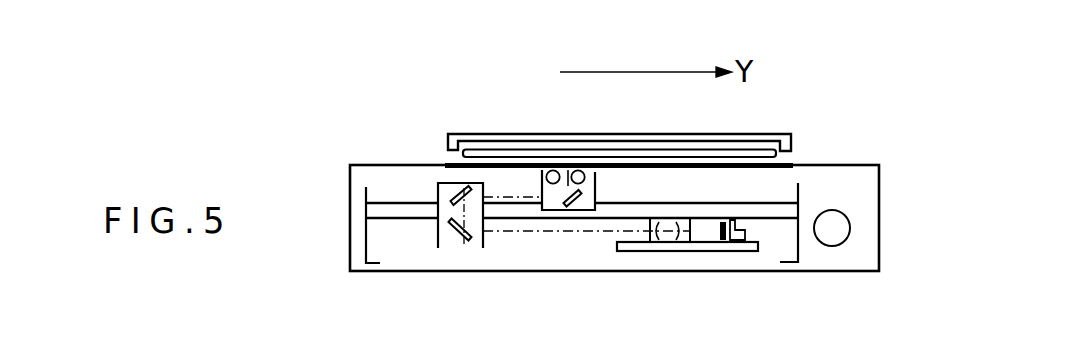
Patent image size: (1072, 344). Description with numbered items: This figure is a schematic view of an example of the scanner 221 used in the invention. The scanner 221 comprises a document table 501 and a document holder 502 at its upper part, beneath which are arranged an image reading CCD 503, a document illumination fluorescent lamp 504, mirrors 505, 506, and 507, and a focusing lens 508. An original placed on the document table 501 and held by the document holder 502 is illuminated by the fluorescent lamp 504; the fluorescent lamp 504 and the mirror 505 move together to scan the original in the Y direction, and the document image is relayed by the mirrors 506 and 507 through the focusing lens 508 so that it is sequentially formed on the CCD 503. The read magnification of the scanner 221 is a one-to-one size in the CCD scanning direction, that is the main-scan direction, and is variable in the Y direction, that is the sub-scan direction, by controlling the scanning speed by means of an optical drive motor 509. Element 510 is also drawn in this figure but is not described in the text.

The scanner 221 is at (868, 223).
The document table 501 is at (795, 162).
The document holder 502 is at (779, 147).
The image reading CCD 503 is at (719, 241).
The document illumination fluorescent lamp 504 is at (579, 170).
The mirror 505 is at (577, 210).
The mirror 506 is at (458, 190).
The mirror 507 is at (456, 242).
The focusing lens 508 is at (665, 232).
The optical drive motor 509 is at (833, 240).
The cover 510 is at (745, 134).